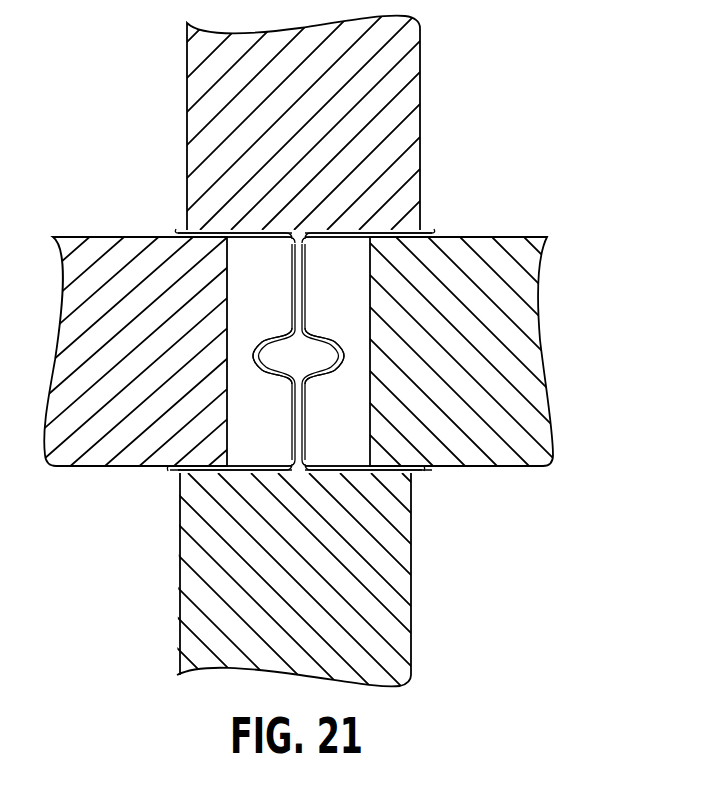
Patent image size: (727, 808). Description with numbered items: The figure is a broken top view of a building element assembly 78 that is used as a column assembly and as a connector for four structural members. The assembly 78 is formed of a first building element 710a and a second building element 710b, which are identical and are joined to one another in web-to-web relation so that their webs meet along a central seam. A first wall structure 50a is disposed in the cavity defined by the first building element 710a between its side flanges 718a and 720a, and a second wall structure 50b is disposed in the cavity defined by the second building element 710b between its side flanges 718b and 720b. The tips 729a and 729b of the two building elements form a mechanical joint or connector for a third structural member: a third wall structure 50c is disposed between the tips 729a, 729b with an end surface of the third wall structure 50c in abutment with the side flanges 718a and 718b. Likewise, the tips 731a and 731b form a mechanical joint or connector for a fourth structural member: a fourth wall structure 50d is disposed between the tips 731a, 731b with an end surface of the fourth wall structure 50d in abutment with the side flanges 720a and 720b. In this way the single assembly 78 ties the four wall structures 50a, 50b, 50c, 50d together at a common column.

The first wall structure 50a is at (74, 231).
The second wall structure 50b is at (545, 308).
The third wall structure 50c is at (425, 80).
The fourth wall structure 50d is at (414, 619).
The building element assembly 78 is at (283, 484).
The first building element 710a is at (273, 243).
The second building element 710b is at (341, 228).
The side flange 718a is at (214, 227).
The side flange 718b is at (399, 227).
The tip 729a is at (177, 231).
The tip 729b is at (430, 230).
The side flange 720a is at (186, 482).
The side flange 720b is at (417, 482).
The tip 731a is at (171, 475).
The tip 731b is at (423, 476).